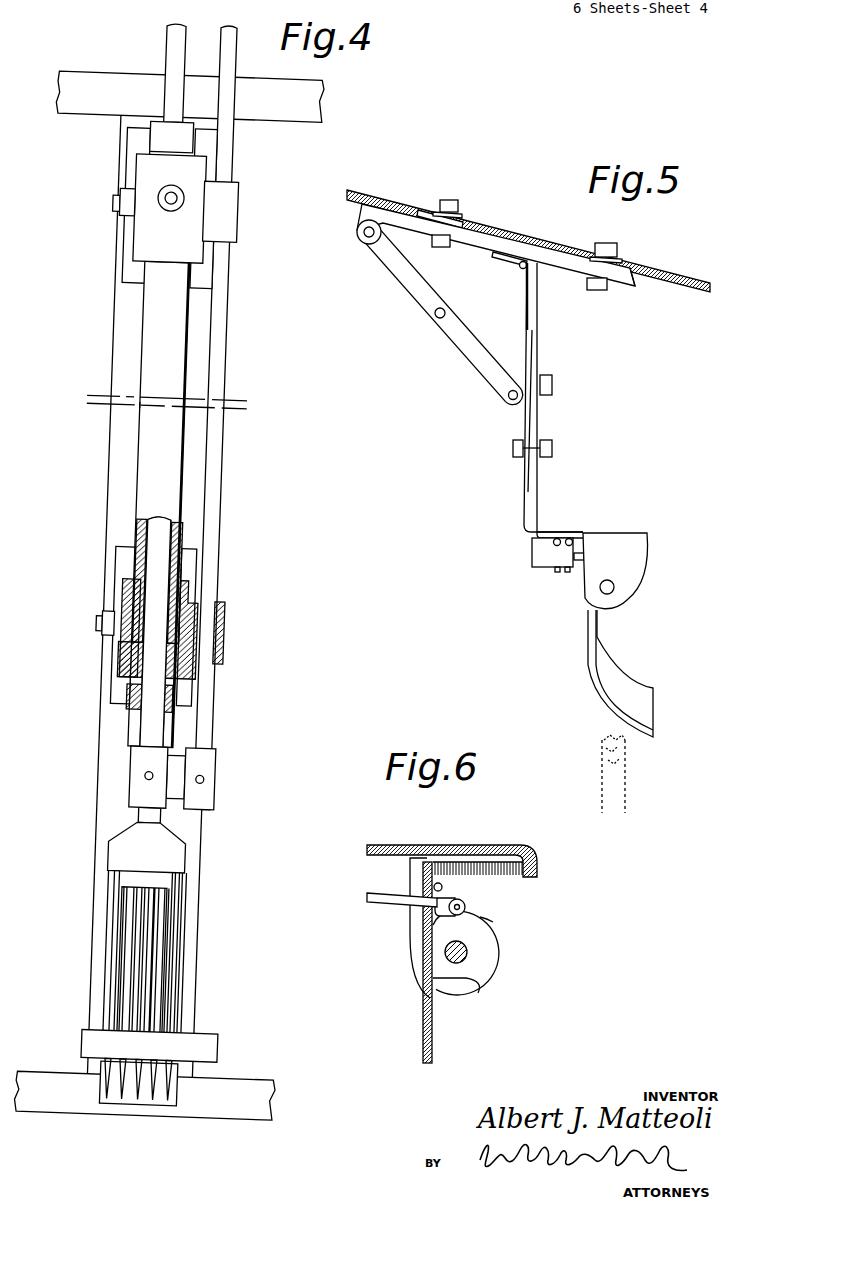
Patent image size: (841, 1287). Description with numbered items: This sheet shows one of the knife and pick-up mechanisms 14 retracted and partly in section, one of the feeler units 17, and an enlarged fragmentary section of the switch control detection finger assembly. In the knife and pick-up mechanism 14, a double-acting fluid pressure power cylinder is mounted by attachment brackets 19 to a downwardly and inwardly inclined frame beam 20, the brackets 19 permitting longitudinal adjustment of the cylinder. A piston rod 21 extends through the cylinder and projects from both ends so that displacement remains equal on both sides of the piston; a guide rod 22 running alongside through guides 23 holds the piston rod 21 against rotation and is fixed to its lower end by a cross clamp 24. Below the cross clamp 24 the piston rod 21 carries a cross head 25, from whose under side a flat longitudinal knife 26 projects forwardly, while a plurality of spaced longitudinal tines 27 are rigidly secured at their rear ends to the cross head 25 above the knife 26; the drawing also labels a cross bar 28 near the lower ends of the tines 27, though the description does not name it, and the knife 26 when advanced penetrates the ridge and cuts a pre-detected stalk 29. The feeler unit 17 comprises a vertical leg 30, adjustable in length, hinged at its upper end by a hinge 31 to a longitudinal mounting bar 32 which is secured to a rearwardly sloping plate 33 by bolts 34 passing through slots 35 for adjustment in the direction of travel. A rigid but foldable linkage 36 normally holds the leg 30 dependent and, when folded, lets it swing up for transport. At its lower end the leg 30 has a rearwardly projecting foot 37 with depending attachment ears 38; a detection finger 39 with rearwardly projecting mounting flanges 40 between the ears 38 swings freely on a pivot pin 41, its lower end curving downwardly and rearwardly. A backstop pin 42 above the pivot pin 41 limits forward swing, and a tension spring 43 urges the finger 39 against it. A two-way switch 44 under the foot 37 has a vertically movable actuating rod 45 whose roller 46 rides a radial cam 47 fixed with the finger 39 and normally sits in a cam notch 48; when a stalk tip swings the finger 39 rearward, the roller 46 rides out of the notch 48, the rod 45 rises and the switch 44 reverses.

In FIG. 4, the knife and pick-up mechanism 14 is at (192, 457).
In FIG. 5, the feeler unit 17 is at (572, 400).
In FIG. 4, the attachment brackets 19 is at (122, 244).
In FIG. 4, the frame beam 20 is at (124, 732).
In FIG. 4, the piston rod 21 is at (158, 51).
In FIG. 4, the guide rod 22 is at (216, 342).
In FIG. 4, the guides 23 is at (227, 220).
In FIG. 4, the cross clamp 24 is at (190, 770).
In FIG. 4, the cross head 25 is at (186, 858).
In FIG. 4, the knife 26 is at (149, 1101).
In FIG. 4, the tines 27 is at (150, 973).
In FIG. 4, the cross bar 28 is at (215, 1041).
In FIG. 5, the stalk 29 is at (627, 785).
In FIG. 5, the leg 30 is at (533, 413).
In FIG. 5, the hinge 31 is at (520, 268).
In FIG. 5, the mounting bar 32 is at (637, 283).
In FIG. 5, the plate 33 is at (378, 197).
In FIG. 5, the bolts 34 is at (453, 203).
In FIG. 5, the slots 35 is at (497, 232).
In FIG. 5, the linkage 36 is at (448, 332).
In FIG. 5, the foot 37 is at (555, 532).
In FIG. 6, the foot 37 is at (460, 845).
In FIG. 5, the attachment ears 38 is at (628, 563).
In FIG. 6, the attachment ears 38 is at (412, 948).
In FIG. 5, the detection finger 39 is at (590, 687).
In FIG. 6, the detection finger 39 is at (422, 1042).
In FIG. 6, the mounting flanges 40 is at (475, 985).
In FIG. 5, the pivot pin 41 is at (615, 587).
In FIG. 6, the pivot pin 41 is at (468, 953).
In FIG. 6, the backstop pin 42 is at (434, 887).
In FIG. 6, the tension spring 43 is at (512, 857).
In FIG. 5, the two-way switch 44 is at (540, 558).
In FIG. 5, the switch actuating rod 45 is at (582, 555).
In FIG. 6, the switch actuating rod 45 is at (385, 903).
In FIG. 6, the roller 46 is at (468, 902).
In FIG. 6, the radial cam 47 is at (493, 922).
In FIG. 6, the cam notch 48 is at (462, 913).